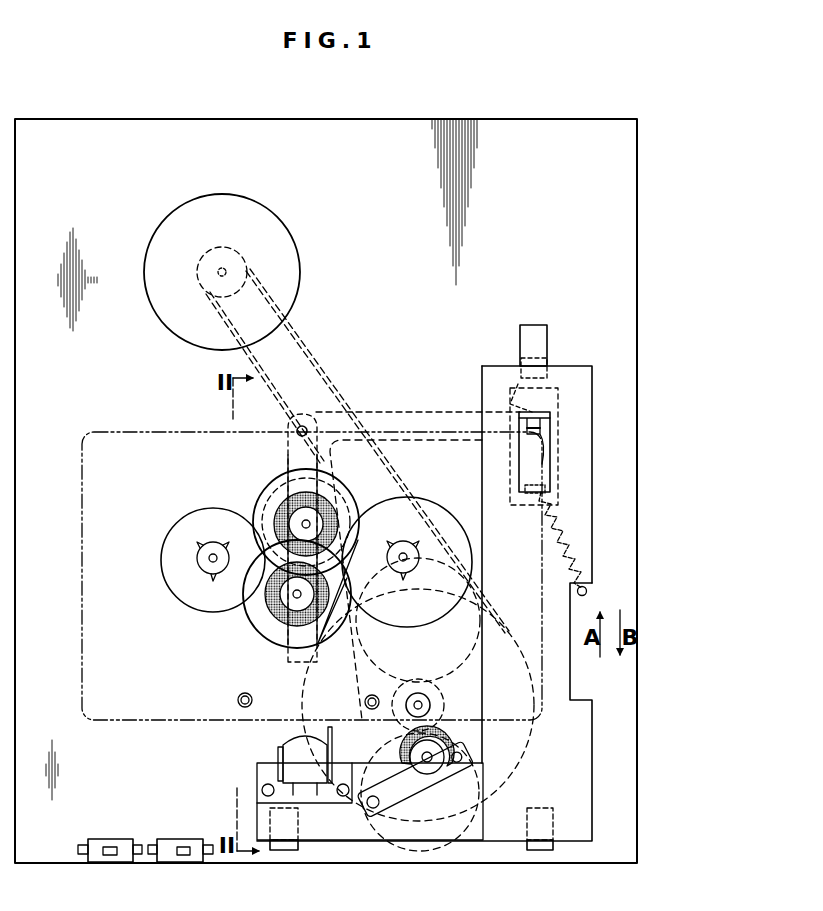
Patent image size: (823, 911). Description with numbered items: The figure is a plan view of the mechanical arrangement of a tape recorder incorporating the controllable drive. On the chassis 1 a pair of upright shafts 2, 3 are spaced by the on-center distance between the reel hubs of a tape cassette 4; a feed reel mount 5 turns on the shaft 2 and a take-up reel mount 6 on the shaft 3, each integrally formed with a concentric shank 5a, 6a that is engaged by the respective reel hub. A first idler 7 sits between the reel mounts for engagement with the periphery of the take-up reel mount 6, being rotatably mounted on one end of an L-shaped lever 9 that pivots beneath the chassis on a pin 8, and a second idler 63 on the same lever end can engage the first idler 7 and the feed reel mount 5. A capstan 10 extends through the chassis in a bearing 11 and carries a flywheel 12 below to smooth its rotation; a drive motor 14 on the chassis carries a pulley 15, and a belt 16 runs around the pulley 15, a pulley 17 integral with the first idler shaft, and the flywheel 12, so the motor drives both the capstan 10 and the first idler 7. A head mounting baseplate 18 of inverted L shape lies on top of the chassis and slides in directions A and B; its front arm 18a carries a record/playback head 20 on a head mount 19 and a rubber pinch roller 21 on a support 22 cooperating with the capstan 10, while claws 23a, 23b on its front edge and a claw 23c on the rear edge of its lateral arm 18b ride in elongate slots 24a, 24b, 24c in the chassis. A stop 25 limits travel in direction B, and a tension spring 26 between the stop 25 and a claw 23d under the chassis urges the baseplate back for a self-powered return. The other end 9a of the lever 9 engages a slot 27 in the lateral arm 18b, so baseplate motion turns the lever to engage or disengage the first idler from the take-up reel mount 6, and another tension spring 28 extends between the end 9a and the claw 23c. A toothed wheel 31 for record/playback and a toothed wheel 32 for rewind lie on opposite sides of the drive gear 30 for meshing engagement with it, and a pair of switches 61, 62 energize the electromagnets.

The chassis 1 is at (625, 243).
The shaft 2 is at (211, 556).
The shaft 3 is at (402, 554).
The tape cassette 4 is at (129, 432).
The feed reel mount 5 is at (170, 551).
The concentric shank 5a is at (206, 566).
The take-up reel mount 6 is at (425, 512).
The concentric shank 6a is at (410, 574).
The first idler 7 is at (272, 510).
The pin 8 is at (303, 426).
The L-shaped lever 9 is at (288, 452).
The other end of lever 9a is at (534, 428).
The capstan 10 is at (430, 703).
The bearing 11 is at (416, 694).
The flywheel 12 is at (530, 744).
The drive motor 14 is at (260, 216).
The pulley 15 is at (224, 260).
The belt 16 is at (308, 338).
The pulley 17 is at (320, 489).
The head mounting baseplate 18 is at (603, 745).
The front arm 18a is at (345, 828).
The lateral arm 18b is at (588, 494).
The head mount 19 is at (262, 772).
The record/playback head 20 is at (290, 740).
The pinch roller 21 is at (454, 749).
The support 22 is at (414, 784).
The claw 23a is at (278, 852).
The claw 23b is at (540, 852).
The claw 23c is at (547, 362).
The claw 23d is at (532, 492).
The elongate slot 24a is at (291, 850).
The elongate slot 24b is at (548, 852).
The elongate slot 24c is at (537, 326).
The stop 25 is at (588, 591).
The tension spring 26 is at (572, 542).
The slot 27 is at (554, 452).
The tension spring 28 is at (520, 382).
The drive gear 30 is at (370, 696).
The toothed wheel 31 is at (464, 830).
The toothed wheel 32 is at (478, 652).
The switch 61 is at (106, 839).
The switch 62 is at (178, 839).
The second idler 63 is at (267, 616).